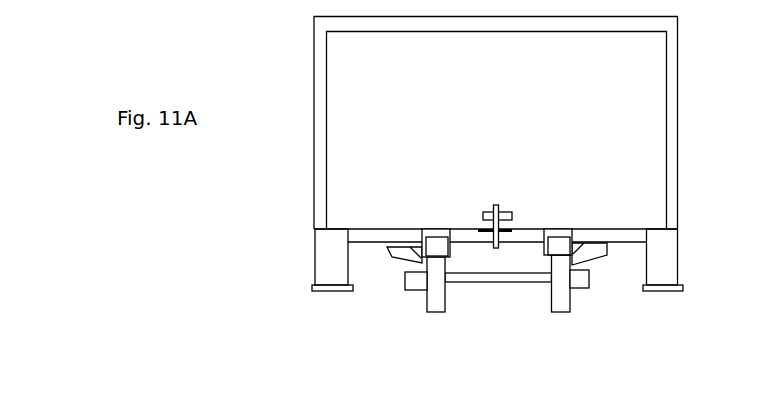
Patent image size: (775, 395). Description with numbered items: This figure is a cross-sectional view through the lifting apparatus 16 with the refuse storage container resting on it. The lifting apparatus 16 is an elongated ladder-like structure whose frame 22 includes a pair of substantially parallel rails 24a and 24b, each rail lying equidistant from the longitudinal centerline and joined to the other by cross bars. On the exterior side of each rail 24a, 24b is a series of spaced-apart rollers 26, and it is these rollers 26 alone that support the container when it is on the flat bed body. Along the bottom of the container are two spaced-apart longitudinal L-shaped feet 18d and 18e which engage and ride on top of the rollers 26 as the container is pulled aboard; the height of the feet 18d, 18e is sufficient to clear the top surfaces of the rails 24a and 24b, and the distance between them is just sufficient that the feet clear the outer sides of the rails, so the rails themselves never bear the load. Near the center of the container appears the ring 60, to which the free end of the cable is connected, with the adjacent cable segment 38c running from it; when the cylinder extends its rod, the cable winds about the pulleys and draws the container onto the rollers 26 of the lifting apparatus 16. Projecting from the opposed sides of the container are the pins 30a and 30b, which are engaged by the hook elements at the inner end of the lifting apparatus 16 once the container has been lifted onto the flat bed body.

The lifting apparatus 16 is at (603, 262).
The L-shaped foot 18d is at (417, 262).
The L-shaped foot 18e is at (580, 248).
The frame 22 is at (604, 310).
The rail 24a is at (560, 312).
The rail 24b is at (443, 313).
The rollers 26 is at (404, 288).
The pin 30a is at (558, 229).
The pin 30b is at (432, 229).
The cross member 38c is at (483, 216).
The ring 60 is at (496, 206).